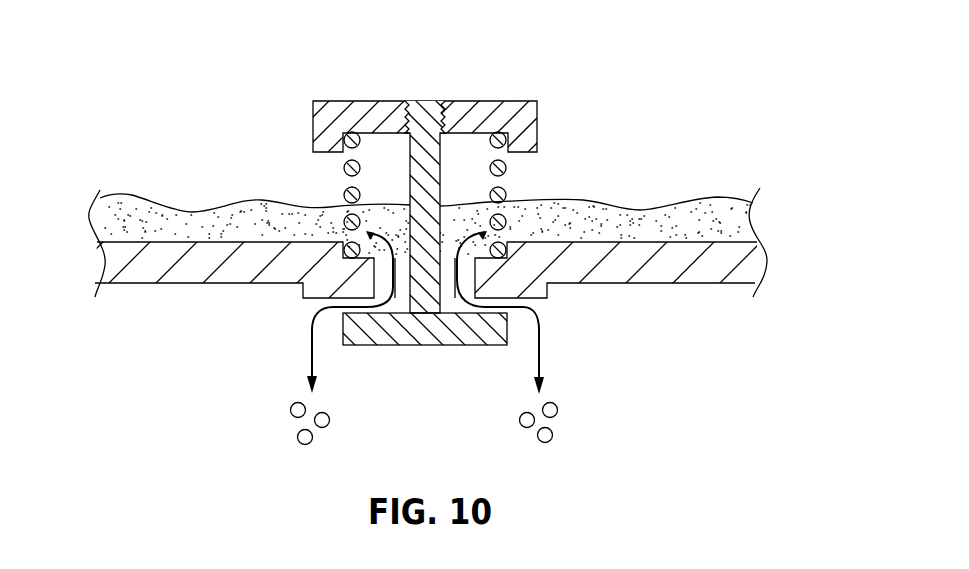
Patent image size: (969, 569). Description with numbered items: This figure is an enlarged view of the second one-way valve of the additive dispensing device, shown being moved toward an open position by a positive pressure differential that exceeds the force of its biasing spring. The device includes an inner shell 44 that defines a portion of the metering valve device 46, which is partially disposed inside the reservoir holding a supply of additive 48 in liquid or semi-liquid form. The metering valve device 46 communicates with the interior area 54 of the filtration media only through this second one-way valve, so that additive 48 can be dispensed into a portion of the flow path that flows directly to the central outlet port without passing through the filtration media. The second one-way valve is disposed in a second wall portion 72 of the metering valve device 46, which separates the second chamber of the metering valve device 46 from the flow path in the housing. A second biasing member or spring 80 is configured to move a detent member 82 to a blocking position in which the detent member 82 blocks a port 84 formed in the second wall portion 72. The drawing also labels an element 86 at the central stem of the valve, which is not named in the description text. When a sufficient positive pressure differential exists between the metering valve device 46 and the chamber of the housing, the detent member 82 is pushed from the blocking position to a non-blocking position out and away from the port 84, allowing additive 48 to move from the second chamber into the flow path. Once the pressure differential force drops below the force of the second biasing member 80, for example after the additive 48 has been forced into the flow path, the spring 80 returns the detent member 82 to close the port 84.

The inner shell 44 is at (123, 286).
The metering valve device 46 is at (200, 283).
The additive 48 is at (640, 208).
The interior area 54 is at (296, 93).
The second wall portion 72 is at (648, 283).
The second biasing member 80 is at (506, 160).
The detent member 82 is at (403, 345).
The port 84 is at (465, 297).
The bolt 86 is at (410, 150).